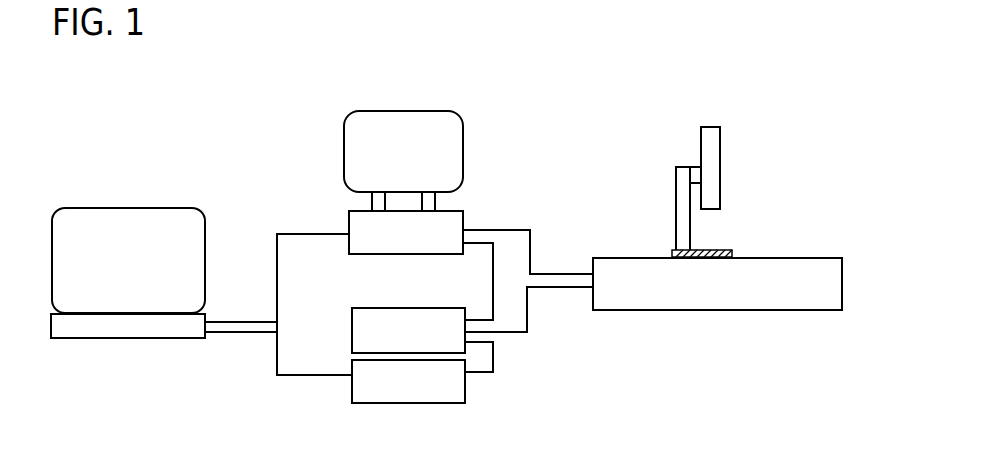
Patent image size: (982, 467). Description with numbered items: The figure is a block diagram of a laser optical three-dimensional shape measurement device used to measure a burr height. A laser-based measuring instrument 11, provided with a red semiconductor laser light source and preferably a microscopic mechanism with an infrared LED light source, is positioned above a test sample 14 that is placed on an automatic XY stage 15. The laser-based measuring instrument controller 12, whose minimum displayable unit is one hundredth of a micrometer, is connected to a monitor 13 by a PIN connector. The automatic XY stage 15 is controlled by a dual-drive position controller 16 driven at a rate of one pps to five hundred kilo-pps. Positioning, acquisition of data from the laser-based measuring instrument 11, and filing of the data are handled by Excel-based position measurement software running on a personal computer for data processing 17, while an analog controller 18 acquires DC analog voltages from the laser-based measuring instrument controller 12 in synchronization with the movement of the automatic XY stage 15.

The laser-based measuring instrument 11 is at (710, 138).
The laser-based measuring instrument controller 12 is at (463, 210).
The monitor 13 is at (452, 123).
The test sample 14 is at (723, 252).
The automatic XY stage 15 is at (726, 298).
The dual-drive position controller 16 is at (352, 320).
The personal computer for data processing 17 is at (127, 217).
The analog controller 18 is at (352, 392).